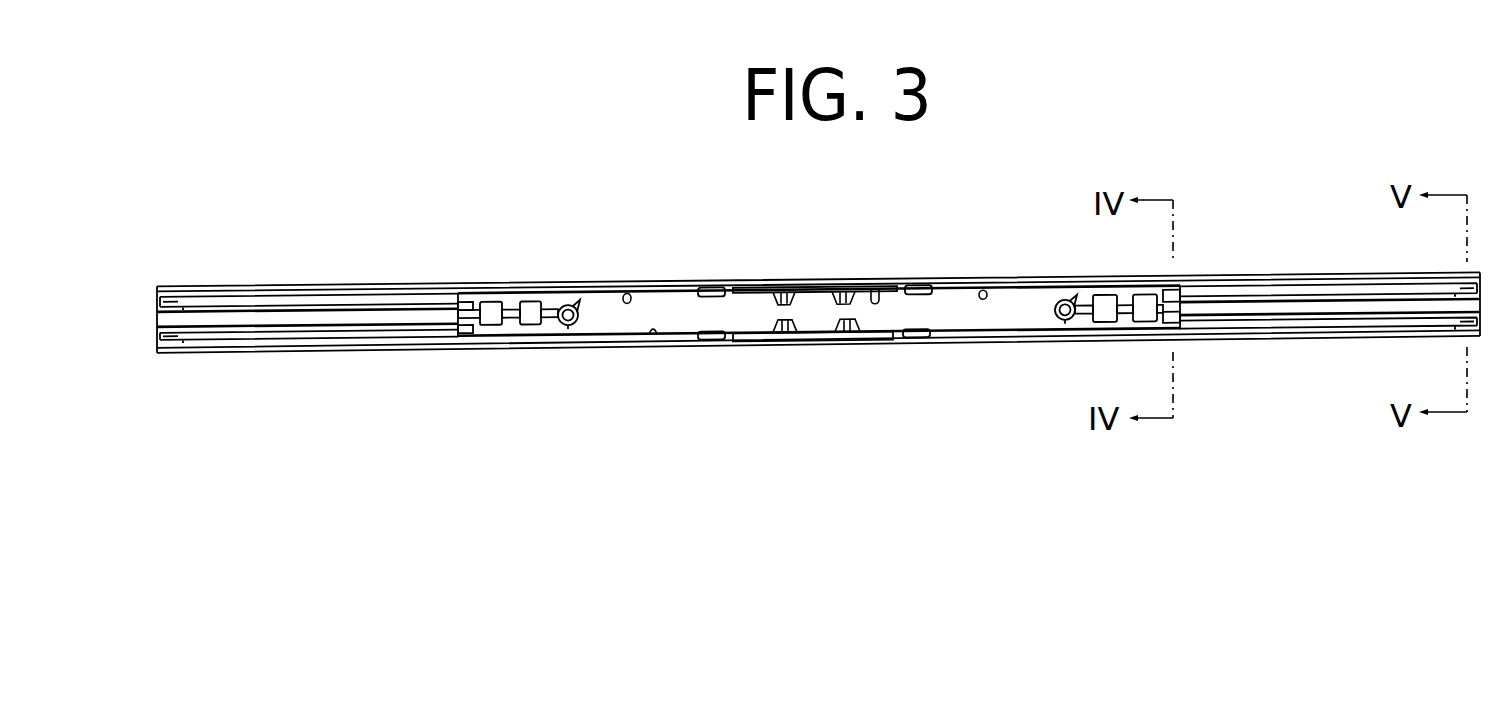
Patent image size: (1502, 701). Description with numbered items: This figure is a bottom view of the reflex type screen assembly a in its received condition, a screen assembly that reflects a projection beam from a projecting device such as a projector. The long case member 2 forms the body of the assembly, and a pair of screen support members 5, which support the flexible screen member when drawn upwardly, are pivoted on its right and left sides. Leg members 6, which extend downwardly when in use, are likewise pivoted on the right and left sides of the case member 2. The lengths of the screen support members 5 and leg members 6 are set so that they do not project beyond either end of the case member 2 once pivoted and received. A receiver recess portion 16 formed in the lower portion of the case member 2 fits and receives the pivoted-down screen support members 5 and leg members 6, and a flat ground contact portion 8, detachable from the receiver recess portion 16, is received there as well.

The reflex type screen assembly a is at (263, 281).
The screen support members 5 is at (355, 313).
The case member 2 is at (542, 283).
The leg members 6 is at (629, 296).
The flat ground contact portion 8 is at (878, 290).
The receiver recess portion 16 is at (648, 345).